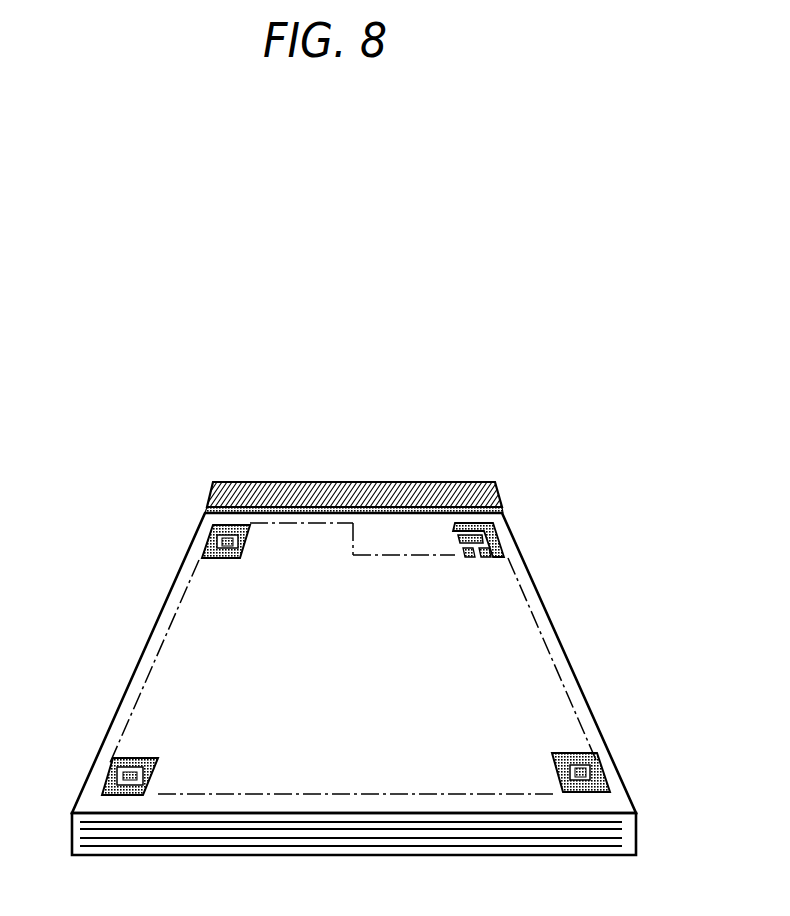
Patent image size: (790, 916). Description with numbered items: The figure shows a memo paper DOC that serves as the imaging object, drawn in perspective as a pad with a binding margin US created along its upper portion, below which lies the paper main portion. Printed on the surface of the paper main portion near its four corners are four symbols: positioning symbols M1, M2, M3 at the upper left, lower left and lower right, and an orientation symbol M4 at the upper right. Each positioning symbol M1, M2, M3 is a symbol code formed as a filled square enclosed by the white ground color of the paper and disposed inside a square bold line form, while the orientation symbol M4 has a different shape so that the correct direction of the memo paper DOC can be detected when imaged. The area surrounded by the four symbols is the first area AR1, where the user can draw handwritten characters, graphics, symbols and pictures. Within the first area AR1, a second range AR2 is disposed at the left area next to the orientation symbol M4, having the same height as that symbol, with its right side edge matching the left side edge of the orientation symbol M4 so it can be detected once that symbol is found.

The memo paper DOC is at (557, 650).
The binding margin US is at (368, 482).
The first area AR1 is at (357, 777).
The second range AR2 is at (443, 533).
The positioning symbol M1 is at (228, 525).
The positioning symbol M2 is at (117, 775).
The positioning symbol M3 is at (600, 772).
The orientation symbol M4 is at (503, 537).